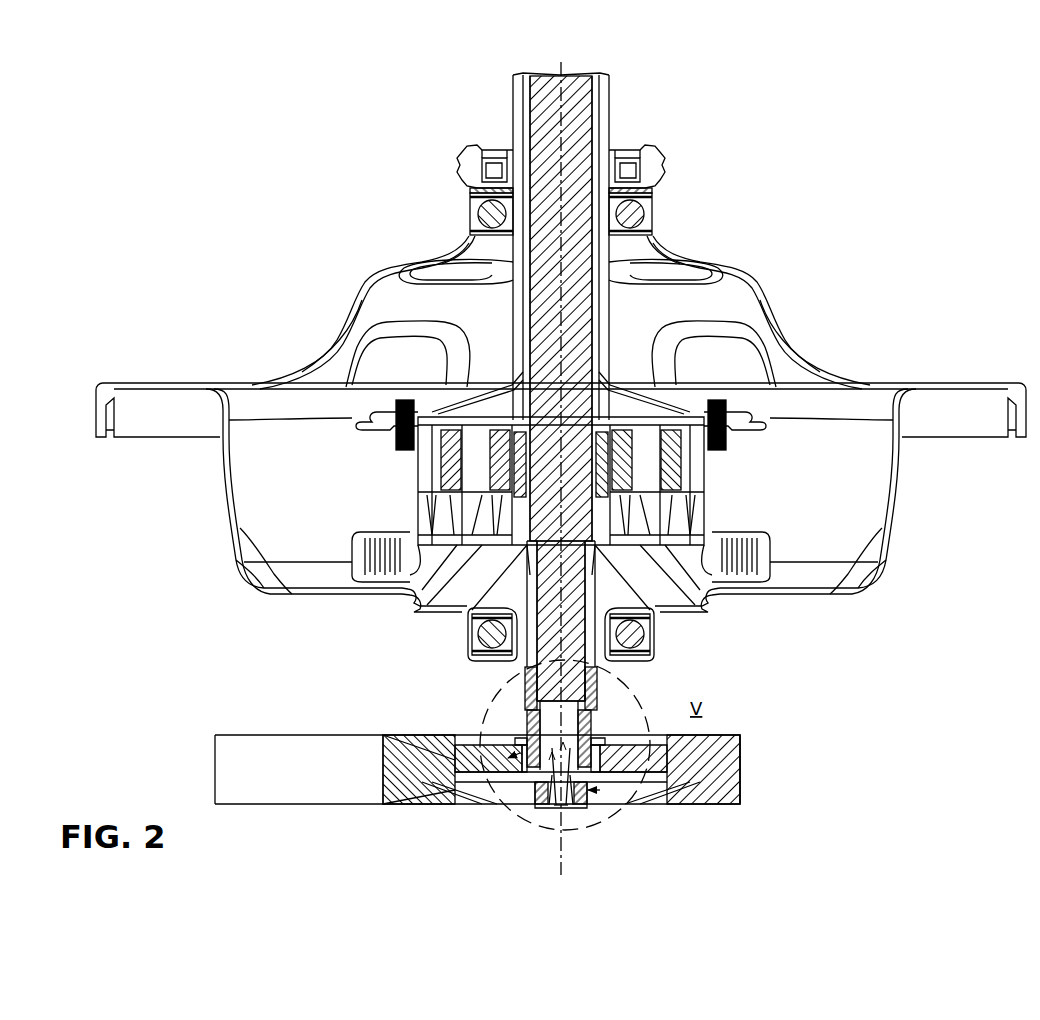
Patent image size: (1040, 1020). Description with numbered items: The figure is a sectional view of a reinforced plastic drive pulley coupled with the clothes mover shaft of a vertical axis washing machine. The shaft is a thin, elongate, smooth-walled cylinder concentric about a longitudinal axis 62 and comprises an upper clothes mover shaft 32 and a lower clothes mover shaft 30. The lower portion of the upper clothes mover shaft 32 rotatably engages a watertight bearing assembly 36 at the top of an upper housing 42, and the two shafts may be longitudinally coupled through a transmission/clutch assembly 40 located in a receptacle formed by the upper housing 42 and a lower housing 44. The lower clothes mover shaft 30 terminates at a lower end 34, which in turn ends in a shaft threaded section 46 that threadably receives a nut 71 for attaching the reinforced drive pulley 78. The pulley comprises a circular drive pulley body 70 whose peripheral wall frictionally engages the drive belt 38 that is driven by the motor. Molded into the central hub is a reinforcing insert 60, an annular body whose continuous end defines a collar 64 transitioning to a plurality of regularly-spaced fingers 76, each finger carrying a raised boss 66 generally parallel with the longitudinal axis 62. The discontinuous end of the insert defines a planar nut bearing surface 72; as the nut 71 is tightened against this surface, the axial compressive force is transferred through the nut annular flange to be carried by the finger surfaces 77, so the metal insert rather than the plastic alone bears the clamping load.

The upper clothes mover shaft 32 is at (578, 118).
The watertight bearing assembly 36 is at (672, 162).
The upper housing 42 is at (770, 270).
The transmission/clutch assembly 40 is at (740, 466).
The lower housing 44 is at (886, 510).
The lower clothes mover shaft 30 is at (650, 630).
The drive belt 38 is at (270, 784).
The reinforced drive pulley 78 is at (732, 728).
The nut bearing surface 72 is at (655, 790).
The reinforcing insert 60 is at (445, 800).
The drive pulley body 70 is at (385, 775).
The lower end 34 is at (588, 805).
The raised boss 66 is at (525, 712).
The collar 64 is at (600, 712).
The fingers 76 is at (525, 745).
The finger surfaces 77 is at (530, 790).
The shaft threaded section 46 is at (545, 800).
The longitudinal axis 62 is at (560, 815).
The nut 71 is at (595, 800).